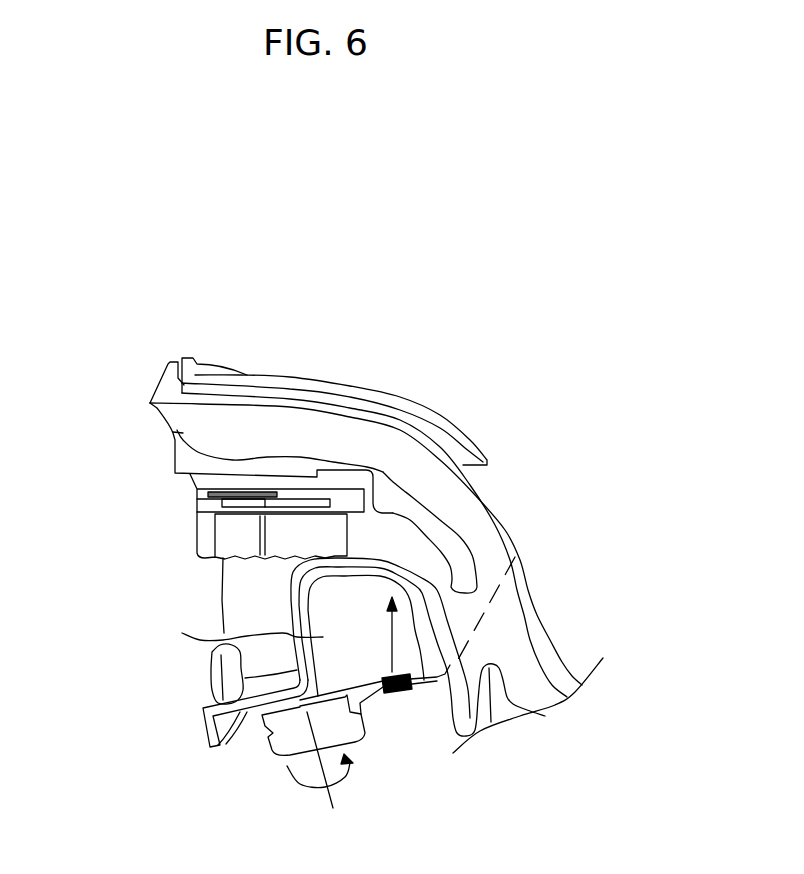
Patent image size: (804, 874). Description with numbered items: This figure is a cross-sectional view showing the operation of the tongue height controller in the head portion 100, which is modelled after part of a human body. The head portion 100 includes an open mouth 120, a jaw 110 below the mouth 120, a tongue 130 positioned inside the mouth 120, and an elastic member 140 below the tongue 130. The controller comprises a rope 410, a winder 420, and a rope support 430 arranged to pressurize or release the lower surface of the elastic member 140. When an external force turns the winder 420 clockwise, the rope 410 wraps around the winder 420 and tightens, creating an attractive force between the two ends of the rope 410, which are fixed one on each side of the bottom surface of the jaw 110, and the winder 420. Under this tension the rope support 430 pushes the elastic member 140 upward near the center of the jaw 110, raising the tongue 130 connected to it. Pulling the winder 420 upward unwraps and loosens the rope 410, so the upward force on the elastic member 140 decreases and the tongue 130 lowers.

The head portion 100 is at (100, 468).
The jaw 110 is at (203, 726).
The open mouth 120 is at (178, 457).
The tongue 130 is at (291, 603).
The elastic member 140 is at (323, 637).
The rope 410 is at (367, 700).
The winder 420 is at (265, 745).
The rope support 430 is at (398, 695).